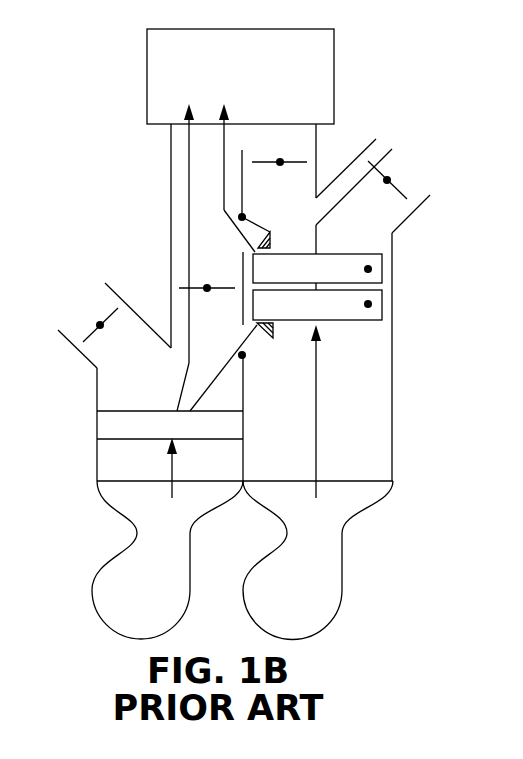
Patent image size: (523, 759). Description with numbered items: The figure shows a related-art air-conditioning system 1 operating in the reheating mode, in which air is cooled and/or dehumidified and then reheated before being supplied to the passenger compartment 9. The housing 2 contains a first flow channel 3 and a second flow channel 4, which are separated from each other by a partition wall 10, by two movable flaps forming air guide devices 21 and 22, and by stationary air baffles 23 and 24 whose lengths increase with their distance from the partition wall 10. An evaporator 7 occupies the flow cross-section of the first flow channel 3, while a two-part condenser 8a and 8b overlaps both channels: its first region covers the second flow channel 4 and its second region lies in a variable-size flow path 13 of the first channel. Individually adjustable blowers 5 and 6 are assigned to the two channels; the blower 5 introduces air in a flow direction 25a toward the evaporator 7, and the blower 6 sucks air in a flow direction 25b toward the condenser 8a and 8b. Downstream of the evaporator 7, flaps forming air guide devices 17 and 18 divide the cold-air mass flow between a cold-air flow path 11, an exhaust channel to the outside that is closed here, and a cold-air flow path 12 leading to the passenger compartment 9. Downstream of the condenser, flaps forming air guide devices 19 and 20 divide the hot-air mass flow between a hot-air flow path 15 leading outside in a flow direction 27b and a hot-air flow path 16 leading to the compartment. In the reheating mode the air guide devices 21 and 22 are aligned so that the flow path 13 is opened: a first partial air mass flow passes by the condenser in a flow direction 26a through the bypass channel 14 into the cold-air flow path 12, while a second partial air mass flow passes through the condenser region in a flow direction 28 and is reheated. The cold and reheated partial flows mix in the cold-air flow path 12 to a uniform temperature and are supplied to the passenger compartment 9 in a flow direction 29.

The air-conditioning system 1 is at (394, 106).
The housing 2 is at (170, 160).
The first flow channel 3 is at (150, 220).
The second flow channel 4 is at (411, 399).
The blower 5 is at (105, 587).
The blower 6 is at (250, 587).
The evaporator 7 is at (107, 422).
The condenser 8a is at (370, 269).
The condenser 8b is at (370, 304).
The passenger compartment 9 is at (311, 62).
The partition wall 10 is at (245, 405).
The cold-air flow path 11 is at (93, 320).
The cold-air flow path 12 is at (220, 164).
The flow path 13 is at (250, 343).
The bypass channel 14 is at (225, 279).
The hot-air flow path 15 is at (432, 183).
The hot-air flow path 16 is at (282, 161).
The air guide device 17 is at (103, 328).
The air guide device 18 is at (180, 288).
The air guide device 19 is at (384, 186).
The air guide device 20 is at (306, 162).
The air guide device 21 is at (242, 355).
The air guide device 22 is at (258, 226).
The air baffle 23 is at (274, 335).
The air baffle 24 is at (272, 239).
The flow direction 25a is at (170, 465).
The flow direction 25b is at (317, 492).
The flow direction 26a is at (184, 110).
The flow direction 27b is at (399, 146).
The flow direction 28 is at (229, 108).
The flow direction 29 is at (222, 103).